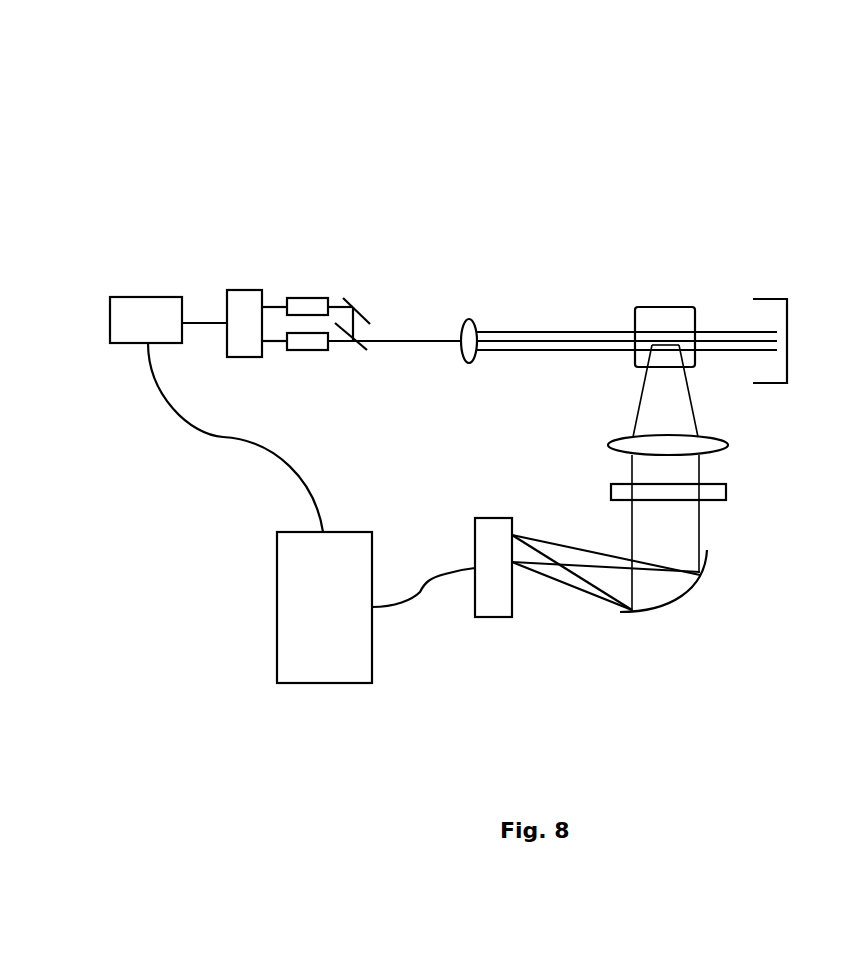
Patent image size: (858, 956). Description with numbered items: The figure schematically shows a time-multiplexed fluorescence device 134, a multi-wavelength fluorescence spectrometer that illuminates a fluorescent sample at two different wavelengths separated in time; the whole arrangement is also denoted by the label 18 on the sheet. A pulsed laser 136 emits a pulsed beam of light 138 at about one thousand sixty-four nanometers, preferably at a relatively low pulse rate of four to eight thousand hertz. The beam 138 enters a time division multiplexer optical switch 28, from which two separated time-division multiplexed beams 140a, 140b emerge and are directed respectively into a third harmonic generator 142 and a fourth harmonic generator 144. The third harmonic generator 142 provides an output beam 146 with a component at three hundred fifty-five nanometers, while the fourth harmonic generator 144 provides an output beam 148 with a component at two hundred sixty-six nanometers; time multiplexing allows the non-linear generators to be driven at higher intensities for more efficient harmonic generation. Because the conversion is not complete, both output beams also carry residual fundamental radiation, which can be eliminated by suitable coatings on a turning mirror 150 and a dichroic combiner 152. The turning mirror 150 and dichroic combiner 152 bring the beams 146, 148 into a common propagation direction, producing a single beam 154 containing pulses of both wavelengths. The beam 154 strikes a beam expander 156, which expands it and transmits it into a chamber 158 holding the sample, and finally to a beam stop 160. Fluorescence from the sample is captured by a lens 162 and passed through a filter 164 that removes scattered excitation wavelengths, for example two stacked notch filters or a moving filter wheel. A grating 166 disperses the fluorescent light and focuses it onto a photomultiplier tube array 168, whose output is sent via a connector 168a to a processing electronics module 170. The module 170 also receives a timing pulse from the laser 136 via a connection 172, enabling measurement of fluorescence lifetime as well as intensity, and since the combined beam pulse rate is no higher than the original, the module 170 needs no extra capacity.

The time-multiplexed fluorescence device 134 is at (50, 56).
The confocal microscope 18 is at (474, 779).
The pulsed laser 136 is at (155, 294).
The pulsed beam of light 138 is at (212, 313).
The time division multiplexer optical switch 28 is at (255, 290).
The time-division multiplexed beam 140a is at (278, 296).
The time-division multiplexed beam 140b is at (280, 351).
The third harmonic generator 142 is at (310, 291).
The fourth harmonic generator 144 is at (322, 360).
The output beam 146 is at (337, 302).
The output beam 148 is at (345, 355).
The turning mirror 150 is at (362, 310).
The dichroic combiner 152 is at (365, 350).
The single beam 154 is at (412, 331).
The beam expander 156 is at (470, 368).
The chamber 158 is at (670, 299).
The beam stop 160 is at (777, 291).
The lens 162 is at (736, 443).
The filter 164 is at (736, 492).
The grating 166 is at (698, 602).
The photomultiplier tube array 168 is at (497, 622).
The connector 168a is at (412, 619).
The processing electronics module 170 is at (273, 608).
The connection 172 is at (203, 445).